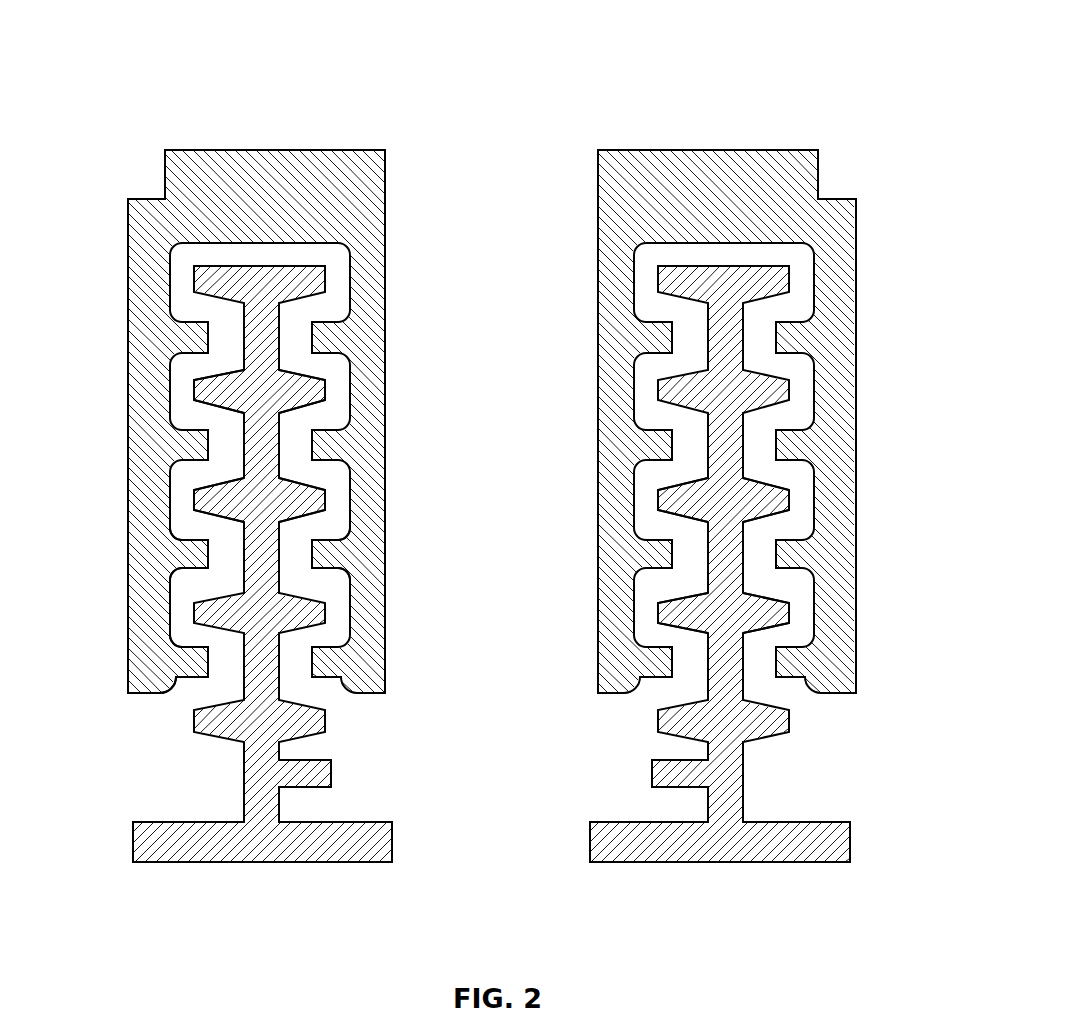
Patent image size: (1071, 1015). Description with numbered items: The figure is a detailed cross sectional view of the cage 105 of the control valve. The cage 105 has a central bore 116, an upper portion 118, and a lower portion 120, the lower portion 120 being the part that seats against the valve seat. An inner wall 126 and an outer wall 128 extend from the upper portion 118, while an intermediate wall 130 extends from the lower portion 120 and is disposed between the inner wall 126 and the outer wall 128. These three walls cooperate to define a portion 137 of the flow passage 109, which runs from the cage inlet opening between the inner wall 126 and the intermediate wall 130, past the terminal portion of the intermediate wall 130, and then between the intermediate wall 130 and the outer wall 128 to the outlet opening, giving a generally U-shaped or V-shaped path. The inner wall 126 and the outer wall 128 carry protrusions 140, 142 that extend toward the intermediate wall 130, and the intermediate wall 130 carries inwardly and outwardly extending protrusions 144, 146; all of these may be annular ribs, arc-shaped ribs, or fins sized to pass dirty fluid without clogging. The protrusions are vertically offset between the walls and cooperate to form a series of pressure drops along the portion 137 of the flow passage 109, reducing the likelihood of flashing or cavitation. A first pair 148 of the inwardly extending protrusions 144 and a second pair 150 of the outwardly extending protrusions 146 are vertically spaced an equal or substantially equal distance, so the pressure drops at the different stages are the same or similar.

The cage 105 is at (735, 56).
The flow passage 109 is at (642, 743).
The central bore 116 is at (600, 370).
The upper portion 118 is at (177, 175).
The lower portion 120 is at (142, 843).
The inner wall 126 is at (636, 443).
The outer wall 128 is at (140, 414).
The intermediate wall 130 is at (258, 323).
The portion of the flow passage 137 is at (187, 633).
The protrusions 140 is at (322, 553).
The protrusions 142 is at (188, 562).
The inwardly extending protrusions 144 is at (318, 502).
The outwardly extending protrusions 146 is at (233, 397).
The first pair 148 is at (672, 503).
The second pair 150 is at (770, 503).